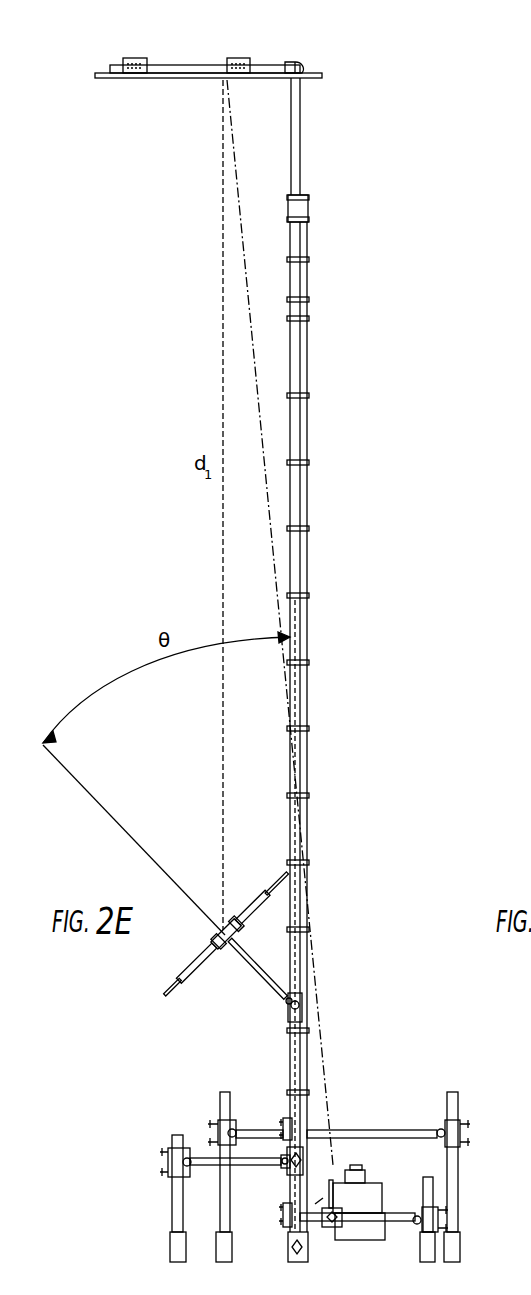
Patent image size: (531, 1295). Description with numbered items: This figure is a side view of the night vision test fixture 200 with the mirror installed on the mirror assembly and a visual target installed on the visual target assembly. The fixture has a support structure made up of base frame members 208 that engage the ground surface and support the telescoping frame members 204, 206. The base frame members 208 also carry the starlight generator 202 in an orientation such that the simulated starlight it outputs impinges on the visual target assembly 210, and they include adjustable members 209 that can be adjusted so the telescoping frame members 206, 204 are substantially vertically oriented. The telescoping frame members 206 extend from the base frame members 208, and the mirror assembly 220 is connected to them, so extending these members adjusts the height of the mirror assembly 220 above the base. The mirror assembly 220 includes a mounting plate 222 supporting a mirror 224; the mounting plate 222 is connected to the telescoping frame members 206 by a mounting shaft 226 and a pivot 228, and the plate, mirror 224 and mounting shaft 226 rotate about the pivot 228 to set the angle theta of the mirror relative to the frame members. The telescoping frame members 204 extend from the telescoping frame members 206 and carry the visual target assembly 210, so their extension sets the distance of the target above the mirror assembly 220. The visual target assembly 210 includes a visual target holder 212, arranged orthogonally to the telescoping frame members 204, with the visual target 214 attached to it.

The night vision test fixture 200 is at (297, 60).
The starlight generator 202 is at (375, 1200).
The telescoping frame members 204 is at (307, 700).
The telescoping frame members 206 is at (310, 1022).
The base frame members 208 is at (171, 1208).
The adjustable members 209 is at (212, 1135).
The visual target assembly 210 is at (99, 70).
The visual target holder 212 is at (97, 80).
The visual target 214 is at (178, 80).
The mirror assembly 220 is at (281, 870).
The mounting plate 222 is at (183, 992).
The mirror 224 is at (242, 910).
The mounting shaft 226 is at (272, 994).
The pivot 228 is at (310, 1003).